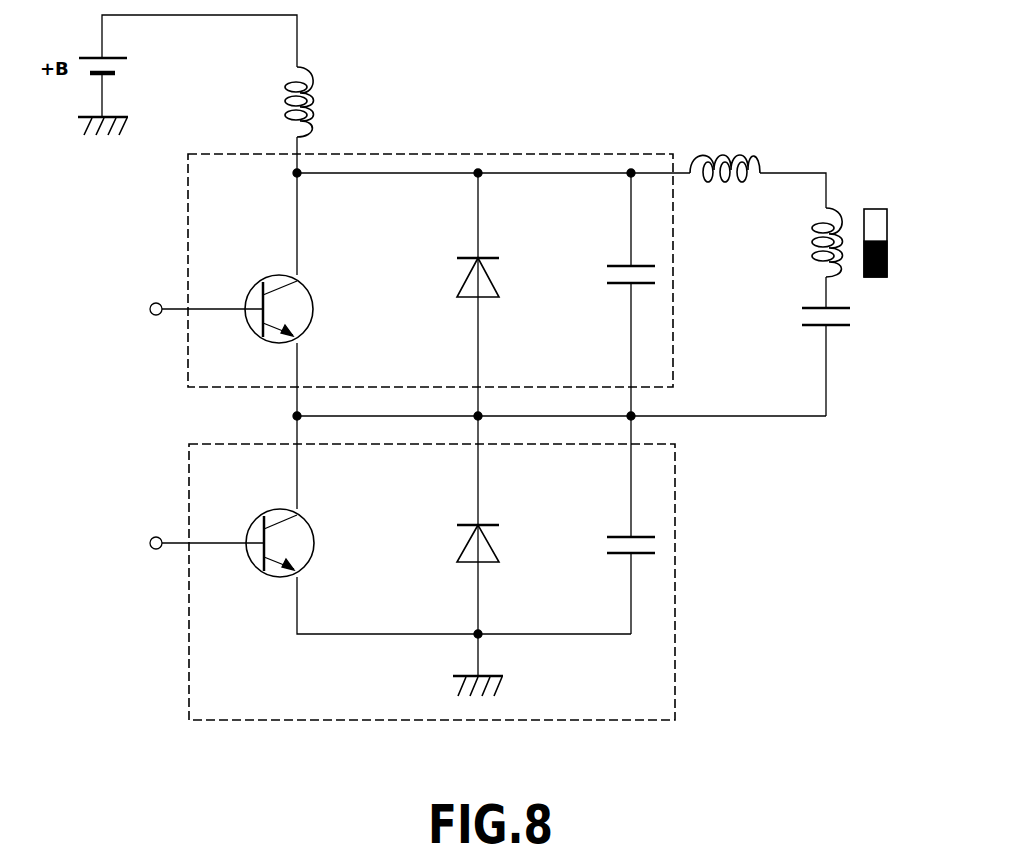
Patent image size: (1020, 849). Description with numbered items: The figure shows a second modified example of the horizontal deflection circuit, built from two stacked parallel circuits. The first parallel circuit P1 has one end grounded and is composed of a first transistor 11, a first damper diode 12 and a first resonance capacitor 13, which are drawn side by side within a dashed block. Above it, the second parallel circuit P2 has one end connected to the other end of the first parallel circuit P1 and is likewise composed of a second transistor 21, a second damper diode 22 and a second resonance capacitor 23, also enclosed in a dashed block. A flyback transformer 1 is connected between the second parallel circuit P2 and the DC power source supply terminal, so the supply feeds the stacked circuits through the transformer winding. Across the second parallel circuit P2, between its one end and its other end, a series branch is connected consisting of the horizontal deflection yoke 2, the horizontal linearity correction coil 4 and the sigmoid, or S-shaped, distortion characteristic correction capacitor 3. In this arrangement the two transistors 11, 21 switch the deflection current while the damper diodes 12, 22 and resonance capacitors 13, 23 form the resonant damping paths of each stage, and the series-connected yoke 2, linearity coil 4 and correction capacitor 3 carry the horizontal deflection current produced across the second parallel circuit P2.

The flyback transformer 1 is at (322, 104).
The horizontal deflection yoke 2 is at (712, 150).
The sigmoid distortion characteristic correction capacitor 3 is at (856, 320).
The horizontal linearity correction coil 4 is at (843, 213).
The first transistor 11 is at (254, 523).
The first damper diode 12 is at (455, 545).
The first resonance capacitor 13 is at (605, 545).
The second transistor 21 is at (252, 290).
The second damper diode 22 is at (457, 280).
The second resonance capacitor 23 is at (603, 275).
The first parallel circuit P1 is at (188, 492).
The second parallel circuit P2 is at (188, 237).